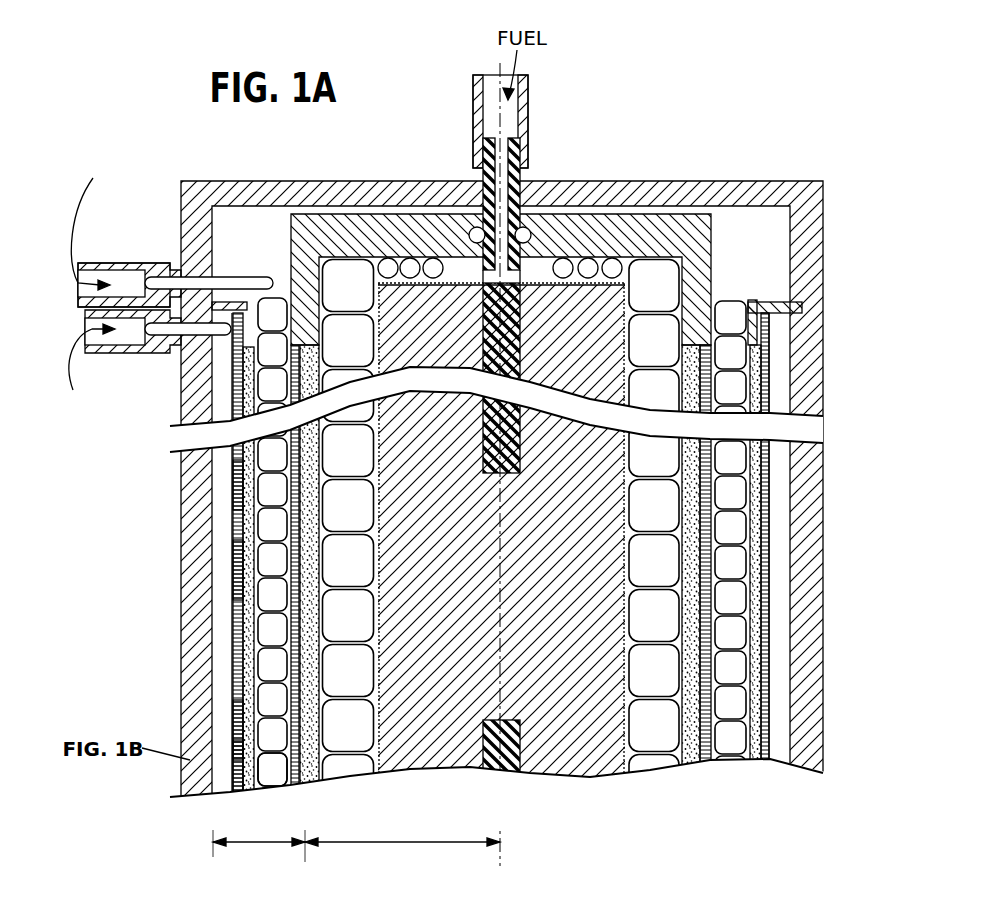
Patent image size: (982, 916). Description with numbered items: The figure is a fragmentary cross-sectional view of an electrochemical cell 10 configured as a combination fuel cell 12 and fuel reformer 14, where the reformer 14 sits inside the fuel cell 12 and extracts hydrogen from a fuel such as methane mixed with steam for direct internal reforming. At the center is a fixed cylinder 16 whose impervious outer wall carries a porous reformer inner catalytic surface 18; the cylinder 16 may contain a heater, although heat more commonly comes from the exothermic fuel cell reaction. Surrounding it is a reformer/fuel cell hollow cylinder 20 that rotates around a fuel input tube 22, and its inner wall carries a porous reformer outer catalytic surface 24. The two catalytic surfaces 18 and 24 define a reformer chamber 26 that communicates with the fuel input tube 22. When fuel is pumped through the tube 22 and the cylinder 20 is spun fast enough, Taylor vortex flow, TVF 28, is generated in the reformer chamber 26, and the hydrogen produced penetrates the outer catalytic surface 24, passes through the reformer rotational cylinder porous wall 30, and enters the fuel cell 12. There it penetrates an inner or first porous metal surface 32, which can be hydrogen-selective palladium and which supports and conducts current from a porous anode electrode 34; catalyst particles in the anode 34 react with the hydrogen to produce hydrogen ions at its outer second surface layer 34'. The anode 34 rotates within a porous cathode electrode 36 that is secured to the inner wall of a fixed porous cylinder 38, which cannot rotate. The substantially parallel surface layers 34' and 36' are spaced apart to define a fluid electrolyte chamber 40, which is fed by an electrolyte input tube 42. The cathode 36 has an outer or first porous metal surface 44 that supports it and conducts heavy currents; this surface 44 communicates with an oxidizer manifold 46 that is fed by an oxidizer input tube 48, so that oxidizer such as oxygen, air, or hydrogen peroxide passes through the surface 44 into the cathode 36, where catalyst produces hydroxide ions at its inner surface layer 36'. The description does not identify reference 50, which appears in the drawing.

The electrochemical cell 10 is at (645, 160).
The fuel cell 12 is at (230, 845).
The fuel reformer 14 is at (445, 845).
The fixed cylinder 16 is at (501, 539).
The reformer inner catalytic surface 18 is at (243, 519).
The reformer/fuel cell hollow cylinder 20 is at (668, 273).
The fuel input tube 22 is at (520, 175).
The reformer outer catalytic surface 24 is at (745, 586).
The reformer chamber 26 is at (654, 530).
The TVF 28 is at (688, 502).
The reformer rotational cylinder porous wall 30 is at (313, 793).
The inner porous metal surface 32 is at (318, 785).
The anode electrode 34 is at (283, 587).
The anode second surface layer 34' is at (233, 785).
The cathode electrode 36 is at (203, 796).
The cathode inner surface layer 36' is at (180, 756).
The fixed porous cylinder 38 is at (233, 675).
The fluid electrolyte chamber 40 is at (272, 549).
The electrolyte input tube 42 is at (102, 263).
The outer porous metal surface 44 is at (233, 570).
The oxidizer manifold 46 is at (223, 600).
The oxidizer input tube 48 is at (98, 352).
The seal 50 is at (238, 490).